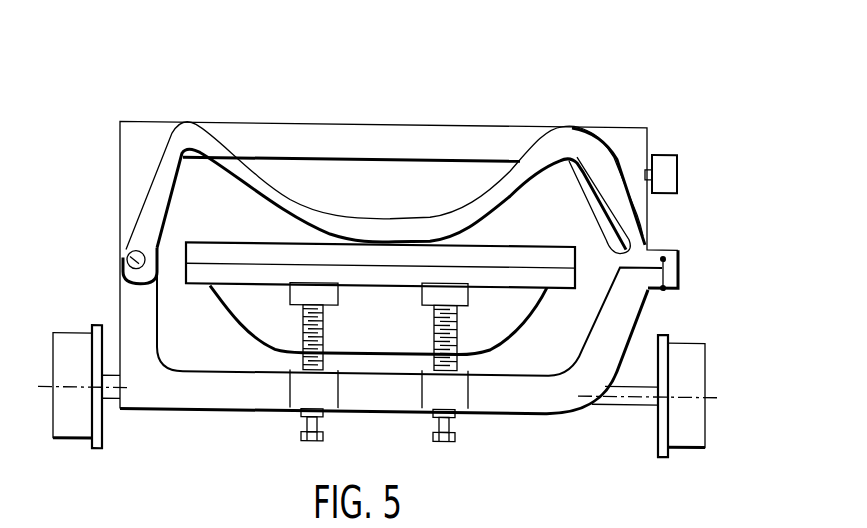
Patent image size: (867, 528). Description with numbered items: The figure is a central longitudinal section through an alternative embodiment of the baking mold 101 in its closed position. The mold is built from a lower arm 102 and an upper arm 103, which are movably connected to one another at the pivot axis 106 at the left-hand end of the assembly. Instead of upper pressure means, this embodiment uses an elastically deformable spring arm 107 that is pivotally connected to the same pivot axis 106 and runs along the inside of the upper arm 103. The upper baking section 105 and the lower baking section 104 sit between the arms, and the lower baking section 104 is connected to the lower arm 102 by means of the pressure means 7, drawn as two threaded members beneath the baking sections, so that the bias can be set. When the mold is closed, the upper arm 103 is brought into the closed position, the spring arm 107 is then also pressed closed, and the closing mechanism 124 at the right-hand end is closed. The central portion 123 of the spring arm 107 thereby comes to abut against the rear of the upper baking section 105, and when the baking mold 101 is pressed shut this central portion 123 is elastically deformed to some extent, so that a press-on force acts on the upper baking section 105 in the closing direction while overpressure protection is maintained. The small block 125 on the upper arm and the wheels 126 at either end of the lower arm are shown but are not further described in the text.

The baking mold 101 is at (186, 98).
The lower arm 102 is at (540, 405).
The upper arm 103 is at (417, 138).
The lower baking section 104 is at (537, 282).
The upper baking section 105 is at (543, 247).
The pivot axis 106 is at (135, 258).
The spring arm 107 is at (147, 200).
The central portion 123 is at (390, 236).
The closing mechanism 124 is at (665, 292).
The stop block 125 is at (663, 163).
The wheel 126 is at (68, 427).
The pressure means 7 is at (283, 437).